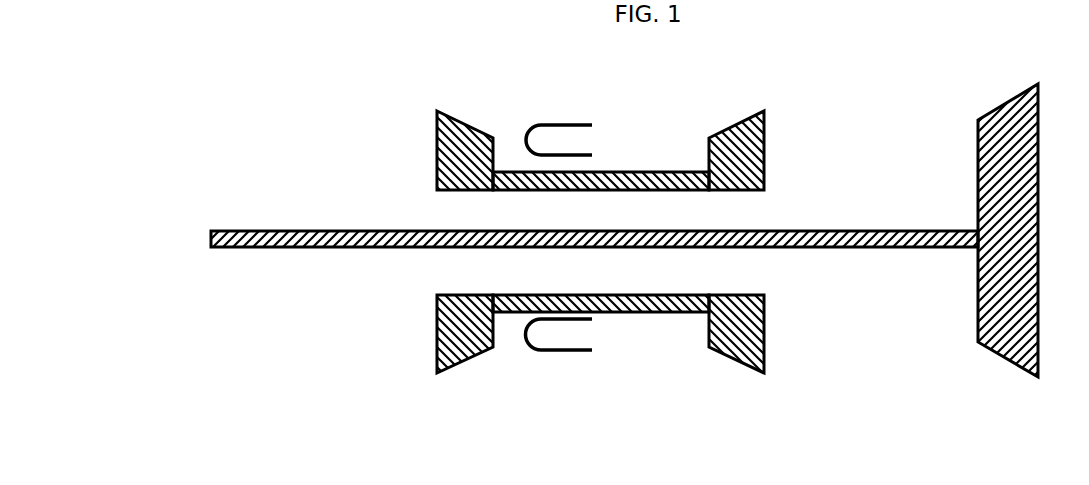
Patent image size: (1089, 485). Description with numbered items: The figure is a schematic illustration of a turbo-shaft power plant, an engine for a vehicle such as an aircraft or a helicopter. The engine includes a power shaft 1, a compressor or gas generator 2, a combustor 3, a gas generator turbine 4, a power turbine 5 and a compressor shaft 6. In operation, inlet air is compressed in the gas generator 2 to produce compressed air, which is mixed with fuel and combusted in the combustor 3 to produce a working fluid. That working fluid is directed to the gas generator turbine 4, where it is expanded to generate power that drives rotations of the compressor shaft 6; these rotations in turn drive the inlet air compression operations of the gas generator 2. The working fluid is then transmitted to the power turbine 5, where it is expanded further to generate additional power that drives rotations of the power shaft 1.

The power shaft 1 is at (275, 206).
The gas generator 2 is at (445, 353).
The combustor 3 is at (548, 350).
The gas generator turbine 4 is at (722, 345).
The power turbine 5 is at (992, 335).
The compressor shaft 6 is at (640, 318).